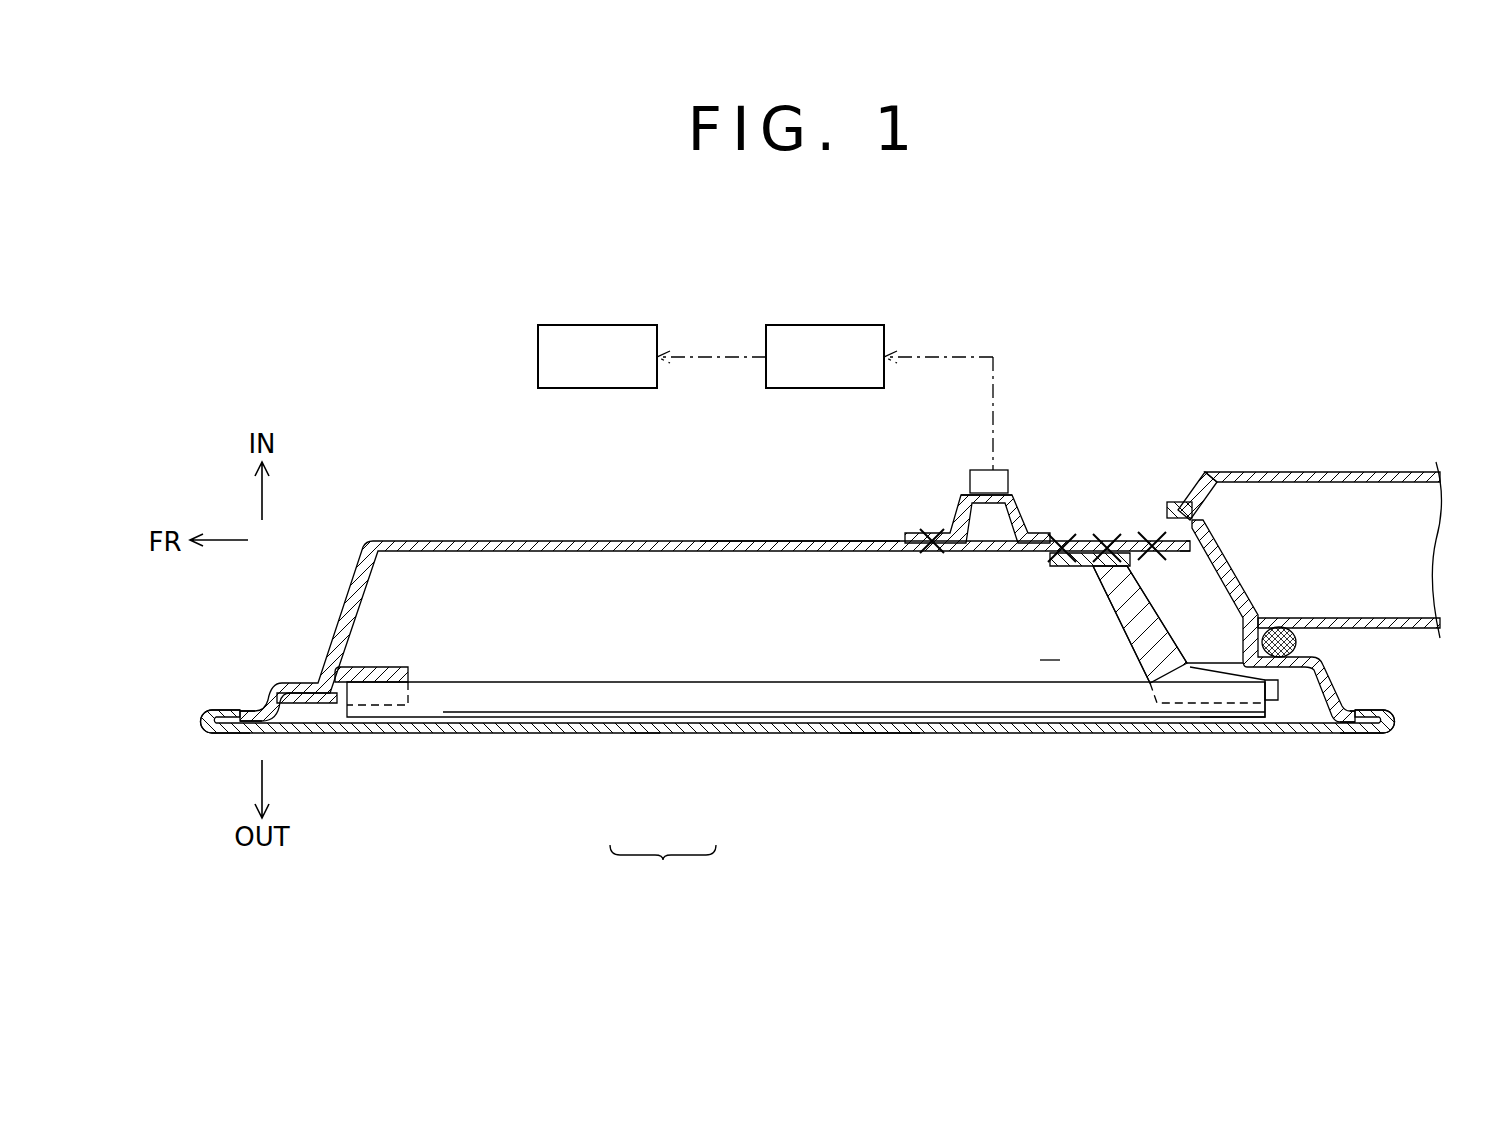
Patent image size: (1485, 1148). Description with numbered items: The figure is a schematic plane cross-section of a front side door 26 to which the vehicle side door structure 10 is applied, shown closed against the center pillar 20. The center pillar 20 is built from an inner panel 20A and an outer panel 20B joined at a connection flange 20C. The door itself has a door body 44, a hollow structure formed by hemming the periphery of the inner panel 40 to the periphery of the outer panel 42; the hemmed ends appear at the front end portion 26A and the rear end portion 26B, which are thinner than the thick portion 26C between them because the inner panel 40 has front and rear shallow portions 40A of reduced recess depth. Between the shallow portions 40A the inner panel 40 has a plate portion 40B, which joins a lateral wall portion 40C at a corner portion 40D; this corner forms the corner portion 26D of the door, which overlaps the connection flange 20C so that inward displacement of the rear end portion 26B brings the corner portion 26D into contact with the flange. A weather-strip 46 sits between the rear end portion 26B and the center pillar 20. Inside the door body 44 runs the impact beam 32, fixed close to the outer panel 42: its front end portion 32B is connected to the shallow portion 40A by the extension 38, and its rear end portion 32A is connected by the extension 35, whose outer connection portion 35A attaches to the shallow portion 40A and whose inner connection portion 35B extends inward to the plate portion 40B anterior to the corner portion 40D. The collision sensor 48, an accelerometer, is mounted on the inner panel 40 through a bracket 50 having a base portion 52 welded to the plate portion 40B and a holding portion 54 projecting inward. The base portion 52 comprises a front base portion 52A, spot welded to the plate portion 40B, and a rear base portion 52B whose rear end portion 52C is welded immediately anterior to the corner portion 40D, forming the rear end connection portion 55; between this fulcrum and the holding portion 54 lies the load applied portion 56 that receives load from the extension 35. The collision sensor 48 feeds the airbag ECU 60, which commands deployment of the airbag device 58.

The vehicle side door structure 10 is at (1052, 668).
The center pillar 20 is at (1306, 513).
The inner panel 20A is at (1390, 482).
The outer panel 20B is at (1395, 618).
The connection flange 20C is at (1188, 505).
The front side door 26 is at (788, 664).
The front end portion 26A is at (250, 740).
The rear end portion 26B is at (1335, 738).
The thick portion 26C is at (880, 738).
The corner portion 26D is at (1200, 540).
The impact beam 32 is at (806, 700).
The rear end portion 32A is at (1225, 703).
The front end portion 32B is at (385, 688).
The extension 35 is at (1172, 675).
The outer connection portion 35A is at (1275, 702).
The inner connection portion 35B is at (1093, 570).
The extension 38 is at (368, 668).
The inner panel 40 is at (822, 657).
The shallow portion 40A is at (300, 690).
The plate portion 40B is at (812, 541).
The lateral wall portion 40C is at (1212, 582).
The corner portion 40D is at (1269, 512).
The outer panel 42 is at (647, 750).
The door body 44 is at (663, 870).
The weather-strip 46 is at (1293, 627).
The collision sensor 48 is at (978, 472).
The bracket 50 is at (1026, 545).
The base portion 52 is at (1037, 545).
The front base portion 52A is at (914, 532).
The rear base portion 52B is at (1105, 530).
The rear end portion 52C is at (1195, 495).
The holding portion 54 is at (1012, 498).
The rear end connection portion 55 is at (1148, 542).
The load applied portion 56 is at (1082, 542).
The airbag device 58 is at (613, 325).
The airbag ECU 60 is at (844, 325).